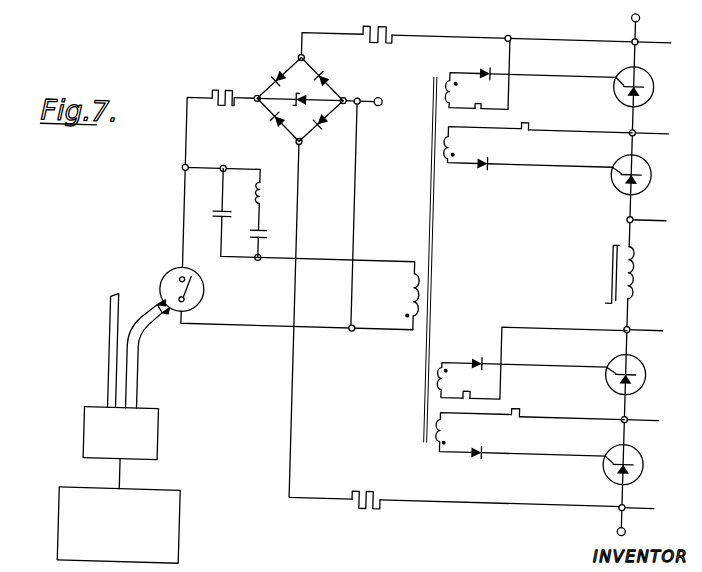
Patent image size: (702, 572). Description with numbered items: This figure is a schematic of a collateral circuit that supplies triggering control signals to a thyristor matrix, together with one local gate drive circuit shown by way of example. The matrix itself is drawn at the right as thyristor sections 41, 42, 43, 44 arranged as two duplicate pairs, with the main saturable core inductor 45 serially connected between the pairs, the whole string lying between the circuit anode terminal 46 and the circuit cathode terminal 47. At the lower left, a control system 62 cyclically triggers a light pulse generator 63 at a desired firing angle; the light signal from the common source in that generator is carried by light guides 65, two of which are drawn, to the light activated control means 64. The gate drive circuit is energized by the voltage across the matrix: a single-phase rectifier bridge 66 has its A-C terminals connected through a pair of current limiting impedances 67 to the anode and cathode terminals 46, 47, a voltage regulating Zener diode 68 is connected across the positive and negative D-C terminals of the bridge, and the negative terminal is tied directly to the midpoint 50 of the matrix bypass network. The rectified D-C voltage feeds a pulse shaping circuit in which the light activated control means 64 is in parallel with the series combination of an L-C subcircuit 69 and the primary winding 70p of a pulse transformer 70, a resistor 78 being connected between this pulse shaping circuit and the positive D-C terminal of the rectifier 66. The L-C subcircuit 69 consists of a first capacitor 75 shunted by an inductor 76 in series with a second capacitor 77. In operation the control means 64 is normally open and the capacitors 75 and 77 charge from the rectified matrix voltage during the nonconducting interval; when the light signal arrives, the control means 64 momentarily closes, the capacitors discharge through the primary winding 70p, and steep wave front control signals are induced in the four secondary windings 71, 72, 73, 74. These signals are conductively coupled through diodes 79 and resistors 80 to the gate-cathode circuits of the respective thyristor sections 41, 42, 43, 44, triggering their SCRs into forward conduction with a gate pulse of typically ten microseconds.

The cathode terminal 47 is at (632, 8).
The anode terminal 46 is at (633, 521).
The thyristor section 44 is at (650, 88).
The thyristor section 42 is at (648, 175).
The thyristor section 41 is at (649, 375).
The thyristor section 43 is at (648, 465).
The main saturable core inductor 45 is at (605, 265).
The current limiting impedance 67 is at (379, 25).
The single-phase rectifier bridge 66 is at (282, 64).
The voltage regulating Zener diode 68 is at (298, 108).
The midpoint of the bypass network 50 is at (373, 96).
The resistor 78 is at (225, 93).
The L-C subcircuit 69 is at (245, 210).
The first capacitor 75 is at (218, 225).
The inductor 76 is at (263, 195).
The second capacitor 77 is at (261, 234).
The light activated control means 64 is at (164, 281).
The light guide 65 is at (119, 365).
The light pulse generator 63 is at (88, 440).
The control system 62 is at (65, 538).
The pulse transformer 70 is at (423, 239).
The primary winding 70p is at (413, 291).
The secondary winding 74 is at (437, 92).
The secondary winding 72 is at (437, 145).
The secondary winding 71 is at (437, 376).
The secondary winding 73 is at (438, 428).
The diode 79 is at (474, 65).
The resistor 80 is at (474, 106).